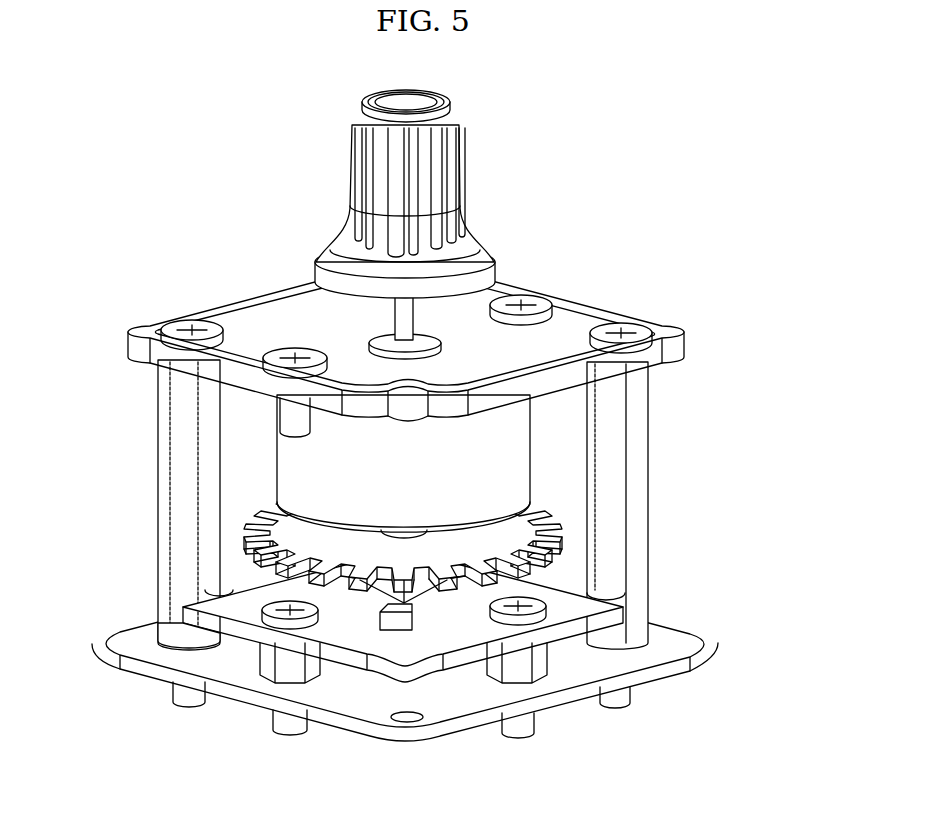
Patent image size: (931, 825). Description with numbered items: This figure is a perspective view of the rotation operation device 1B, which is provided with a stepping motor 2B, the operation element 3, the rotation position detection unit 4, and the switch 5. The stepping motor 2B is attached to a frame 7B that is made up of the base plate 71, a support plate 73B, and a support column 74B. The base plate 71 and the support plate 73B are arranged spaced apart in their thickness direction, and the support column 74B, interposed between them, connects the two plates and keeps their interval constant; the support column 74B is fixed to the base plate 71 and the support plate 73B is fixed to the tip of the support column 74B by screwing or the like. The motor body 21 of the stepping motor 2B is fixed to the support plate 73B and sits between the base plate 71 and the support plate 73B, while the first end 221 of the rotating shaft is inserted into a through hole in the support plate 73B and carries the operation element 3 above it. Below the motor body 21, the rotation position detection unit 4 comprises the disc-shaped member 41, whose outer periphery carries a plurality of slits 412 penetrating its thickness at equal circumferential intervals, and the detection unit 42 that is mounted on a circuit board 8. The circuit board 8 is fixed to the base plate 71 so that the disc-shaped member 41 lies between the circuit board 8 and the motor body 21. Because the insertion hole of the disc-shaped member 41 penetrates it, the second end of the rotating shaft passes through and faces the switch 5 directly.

The rotation operation device 1B is at (437, 434).
The operation element 3 is at (462, 158).
The frame 7B is at (437, 491).
The first end 221 is at (398, 322).
The support plate 73B is at (684, 338).
The stepping motor 2B is at (423, 466).
The motor body 21 is at (515, 450).
The support column 74B is at (160, 490).
The rotation position detection unit 4 is at (428, 637).
The disc-shaped member 41 is at (562, 538).
The slits 412 is at (478, 595).
The base plate 71 is at (696, 656).
The circuit board 8 is at (245, 628).
The switch 5 is at (370, 590).
The detection unit 42 is at (396, 622).